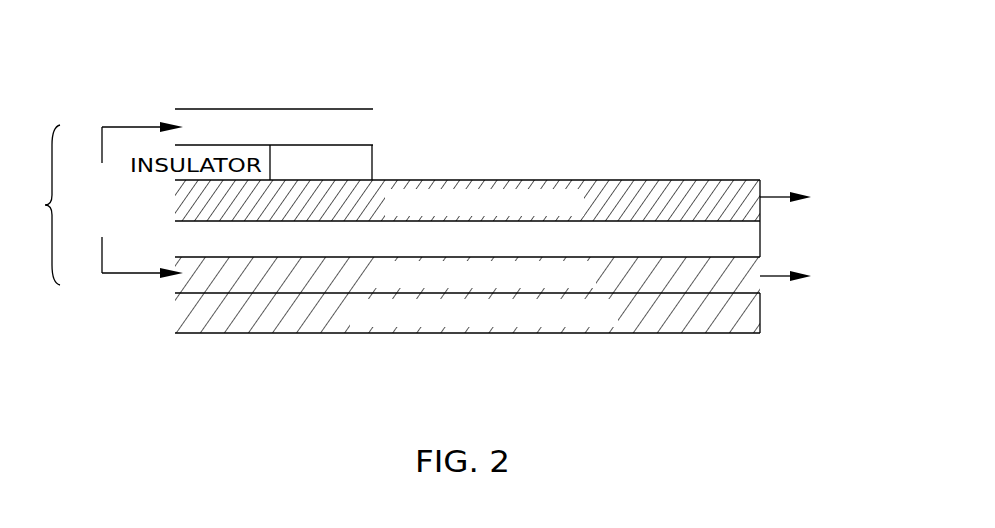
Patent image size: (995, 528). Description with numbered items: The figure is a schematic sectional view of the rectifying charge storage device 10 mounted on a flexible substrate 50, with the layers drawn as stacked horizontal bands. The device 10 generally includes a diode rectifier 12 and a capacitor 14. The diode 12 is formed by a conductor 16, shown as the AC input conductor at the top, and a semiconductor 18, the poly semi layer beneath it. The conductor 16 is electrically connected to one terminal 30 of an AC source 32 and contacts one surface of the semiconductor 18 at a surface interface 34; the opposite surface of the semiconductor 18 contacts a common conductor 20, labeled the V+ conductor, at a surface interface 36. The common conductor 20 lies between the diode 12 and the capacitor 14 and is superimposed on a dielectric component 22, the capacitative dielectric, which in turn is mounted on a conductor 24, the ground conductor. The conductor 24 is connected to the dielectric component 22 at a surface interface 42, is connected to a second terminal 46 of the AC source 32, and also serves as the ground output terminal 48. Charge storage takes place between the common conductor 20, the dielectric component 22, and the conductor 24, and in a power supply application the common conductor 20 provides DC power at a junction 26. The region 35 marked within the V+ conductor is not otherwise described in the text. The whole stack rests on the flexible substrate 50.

The rectifying charge storage device 10 is at (36, 205).
The diode rectifier 12 is at (319, 86).
The capacitor 14 is at (632, 293).
The conductor 16 is at (344, 108).
The semiconductor 18 is at (372, 175).
The common conductor 20 is at (508, 176).
The dielectric component 22 is at (705, 237).
The conductor 24 is at (632, 270).
The junction 26 is at (774, 186).
The terminal 30 is at (142, 115).
The AC source 32 is at (86, 188).
The surface interface 34 is at (440, 86).
The V+ conductor region 35 is at (614, 208).
The surface interface 36 is at (289, 178).
The surface interface 42 is at (728, 256).
The second terminal 46 is at (142, 288).
The ground output terminal 48 is at (745, 190).
The flexible substrate 50 is at (304, 311).